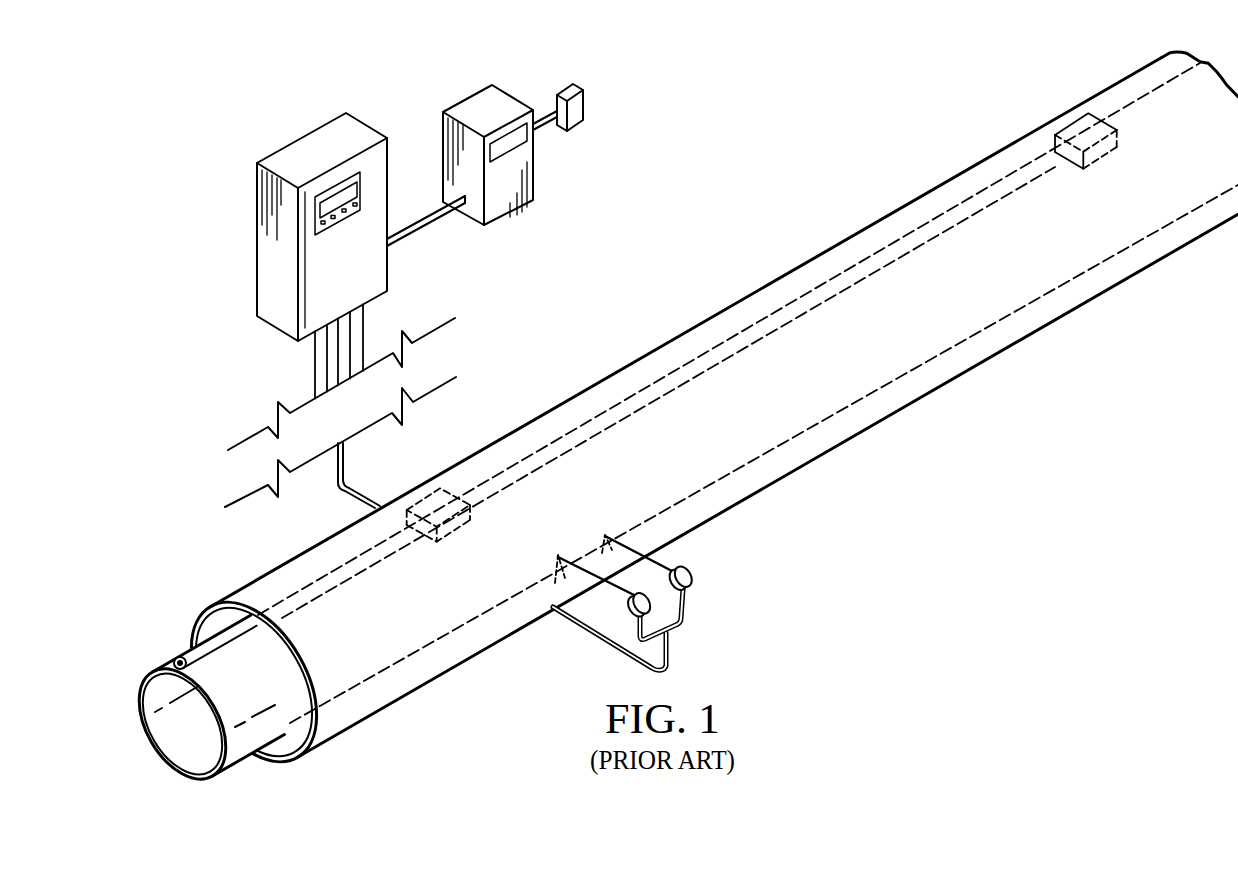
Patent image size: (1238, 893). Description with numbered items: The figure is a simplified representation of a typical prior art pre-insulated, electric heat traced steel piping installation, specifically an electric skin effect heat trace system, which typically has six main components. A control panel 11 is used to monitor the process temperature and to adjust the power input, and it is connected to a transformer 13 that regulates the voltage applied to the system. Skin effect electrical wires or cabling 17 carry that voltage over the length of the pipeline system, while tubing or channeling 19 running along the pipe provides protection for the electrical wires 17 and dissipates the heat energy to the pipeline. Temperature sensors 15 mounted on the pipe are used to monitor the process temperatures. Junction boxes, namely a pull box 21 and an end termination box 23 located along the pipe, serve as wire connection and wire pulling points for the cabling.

The control panel 11 is at (316, 145).
The transformer 13 is at (482, 102).
The temperature sensors 15 is at (697, 580).
The skin effect electrical wires or cabling 17 is at (172, 662).
The tubing or channeling 19 is at (757, 325).
The pull box 21 is at (425, 490).
The end termination box 23 is at (1068, 118).